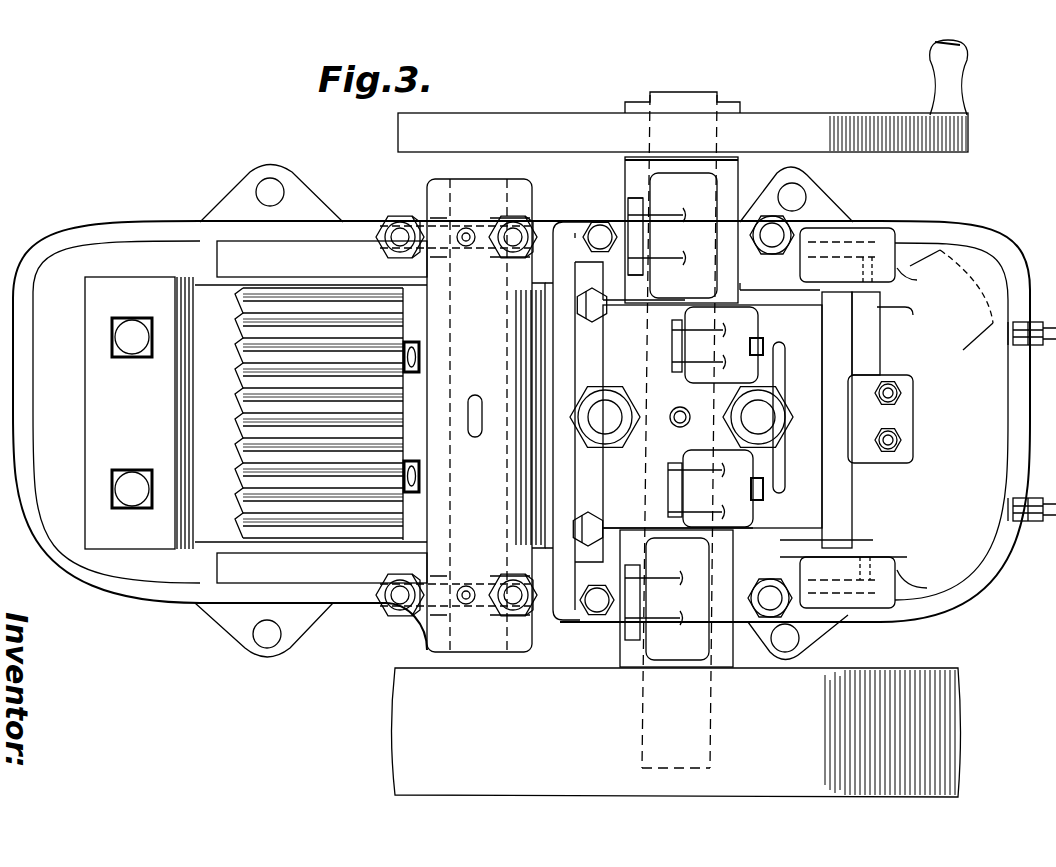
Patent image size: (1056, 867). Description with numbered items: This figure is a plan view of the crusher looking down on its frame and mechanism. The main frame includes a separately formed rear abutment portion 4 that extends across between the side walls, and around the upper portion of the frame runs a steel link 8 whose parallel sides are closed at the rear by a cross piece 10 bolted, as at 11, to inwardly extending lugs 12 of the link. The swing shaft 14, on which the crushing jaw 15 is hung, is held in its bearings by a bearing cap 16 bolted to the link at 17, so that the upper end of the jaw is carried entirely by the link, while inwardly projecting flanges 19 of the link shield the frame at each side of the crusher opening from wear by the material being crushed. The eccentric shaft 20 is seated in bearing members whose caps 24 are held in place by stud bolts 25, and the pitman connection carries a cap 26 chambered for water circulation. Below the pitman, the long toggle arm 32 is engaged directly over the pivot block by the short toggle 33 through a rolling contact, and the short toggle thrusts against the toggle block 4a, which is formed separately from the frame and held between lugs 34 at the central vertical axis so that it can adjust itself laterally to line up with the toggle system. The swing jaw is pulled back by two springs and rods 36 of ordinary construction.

The rear abutment portion 4 is at (951, 341).
The toggle block 4a is at (828, 468).
The upper steel link 8 is at (188, 232).
The cross piece 10 is at (545, 332).
The bolts 11 is at (597, 310).
The inwardly extending lugs 12 is at (560, 313).
The swing shaft 14 is at (450, 195).
The crushing jaw 15 is at (430, 517).
The bearing cap 16 is at (440, 187).
The bolts 17 is at (393, 232).
The inwardly projecting flanges 19 is at (256, 412).
The eccentric shaft 20 is at (722, 490).
The bearing caps 24 is at (632, 182).
The stud bolts 25 is at (776, 232).
The pitman cap 26 is at (715, 395).
The long toggle arm 32 is at (608, 533).
The short toggle 33 is at (810, 502).
The upper lug 34 is at (866, 386).
The springs and rods 36 is at (1040, 320).